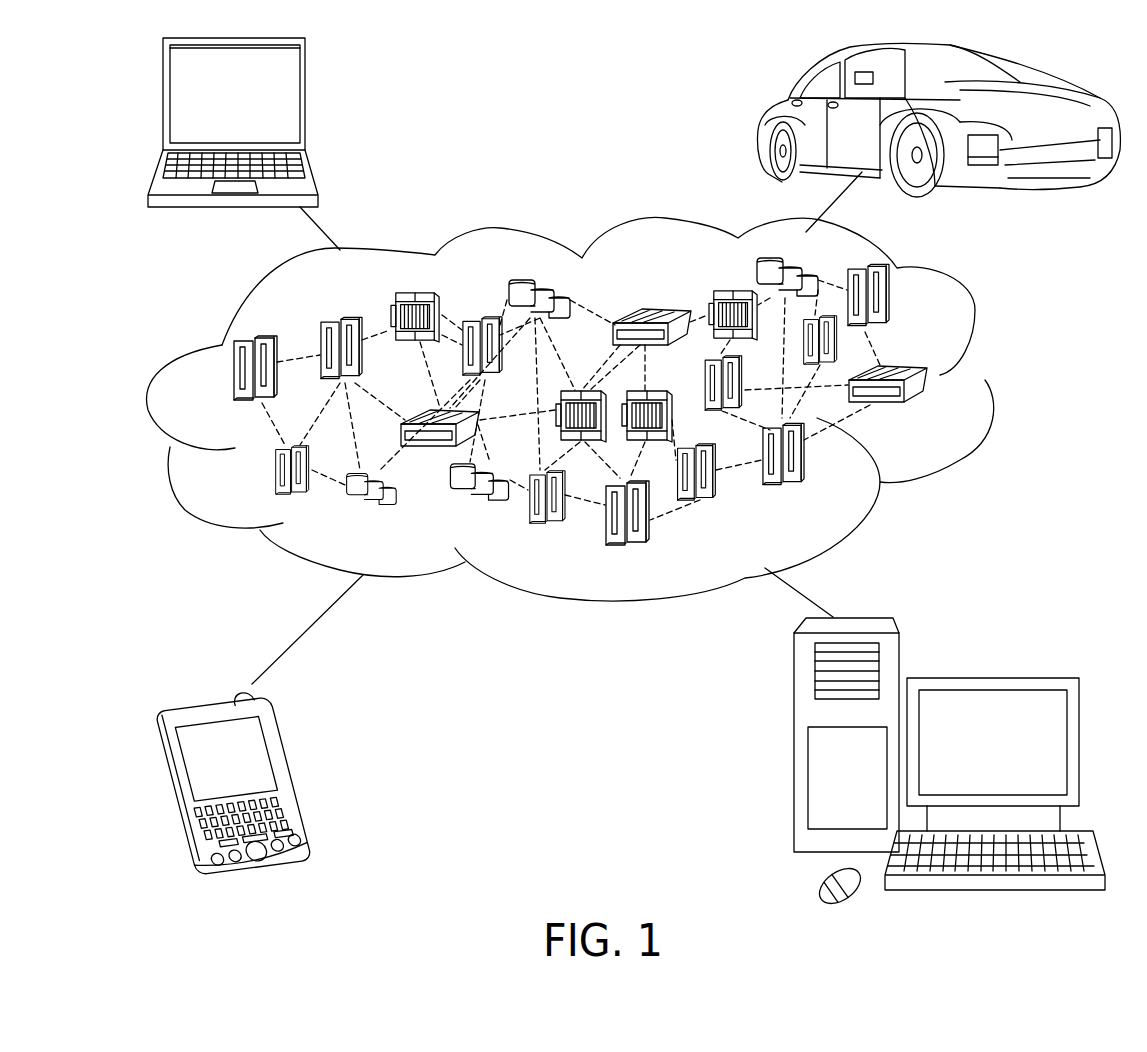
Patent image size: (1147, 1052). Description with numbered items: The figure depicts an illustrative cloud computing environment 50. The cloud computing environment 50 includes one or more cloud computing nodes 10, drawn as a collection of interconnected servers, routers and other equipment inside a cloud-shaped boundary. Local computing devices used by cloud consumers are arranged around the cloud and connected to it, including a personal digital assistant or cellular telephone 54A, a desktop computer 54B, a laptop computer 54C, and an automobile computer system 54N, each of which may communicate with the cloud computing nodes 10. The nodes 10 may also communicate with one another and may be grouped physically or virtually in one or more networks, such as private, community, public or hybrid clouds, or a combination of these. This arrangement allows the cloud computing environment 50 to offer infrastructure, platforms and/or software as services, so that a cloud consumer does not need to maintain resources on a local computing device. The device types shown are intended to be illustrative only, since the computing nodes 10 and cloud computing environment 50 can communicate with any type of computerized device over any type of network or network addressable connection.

The cloud computing nodes 10 is at (942, 415).
The cloud computing environment 50 is at (992, 382).
The personal digital assistant or cellular telephone 54A is at (290, 768).
The desktop computer 54B is at (990, 677).
The laptop computer 54C is at (305, 100).
The automobile computer system 54N is at (762, 120).